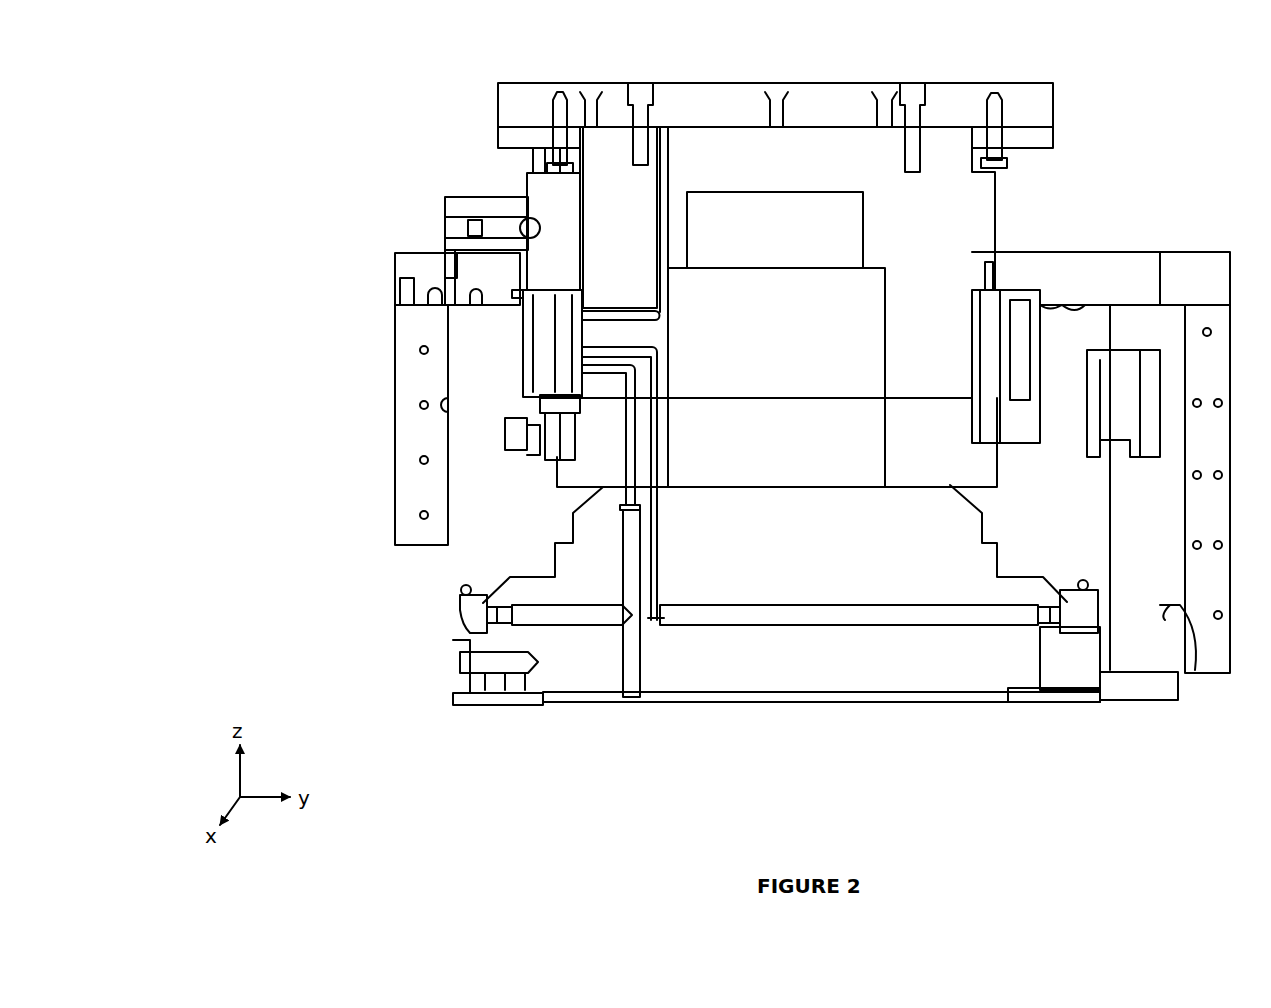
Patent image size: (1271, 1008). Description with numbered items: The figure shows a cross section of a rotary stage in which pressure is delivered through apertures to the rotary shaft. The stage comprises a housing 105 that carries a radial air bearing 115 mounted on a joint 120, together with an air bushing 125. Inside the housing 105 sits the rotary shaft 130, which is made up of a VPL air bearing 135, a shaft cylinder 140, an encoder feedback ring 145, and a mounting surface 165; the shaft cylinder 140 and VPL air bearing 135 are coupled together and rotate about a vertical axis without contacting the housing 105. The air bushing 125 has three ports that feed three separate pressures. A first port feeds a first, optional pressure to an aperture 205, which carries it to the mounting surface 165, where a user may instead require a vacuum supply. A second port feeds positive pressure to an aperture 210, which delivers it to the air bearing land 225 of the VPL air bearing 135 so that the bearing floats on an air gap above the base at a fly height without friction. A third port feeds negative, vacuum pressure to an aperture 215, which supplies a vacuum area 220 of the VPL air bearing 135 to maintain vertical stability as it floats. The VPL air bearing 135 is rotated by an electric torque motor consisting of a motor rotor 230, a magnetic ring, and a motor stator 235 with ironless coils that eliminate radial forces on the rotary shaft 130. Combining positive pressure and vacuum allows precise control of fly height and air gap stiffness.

The housing 105 is at (394, 252).
The radial air bearing 115 is at (526, 182).
The joint 120 is at (527, 215).
The air bushing 125 is at (570, 345).
The rotary shaft 130 is at (492, 76).
The VPL air bearing 135 is at (548, 560).
The shaft cylinder 140 is at (975, 205).
The encoder feedback ring 145 is at (488, 133).
The mounting surface 165 is at (972, 78).
The aperture 205 is at (657, 300).
The aperture 210 is at (665, 350).
The aperture 215 is at (643, 380).
The vacuum area 220 is at (896, 706).
The air bearing land 225 is at (508, 706).
The motor rotor 230 is at (557, 460).
The motor stator 235 is at (540, 465).